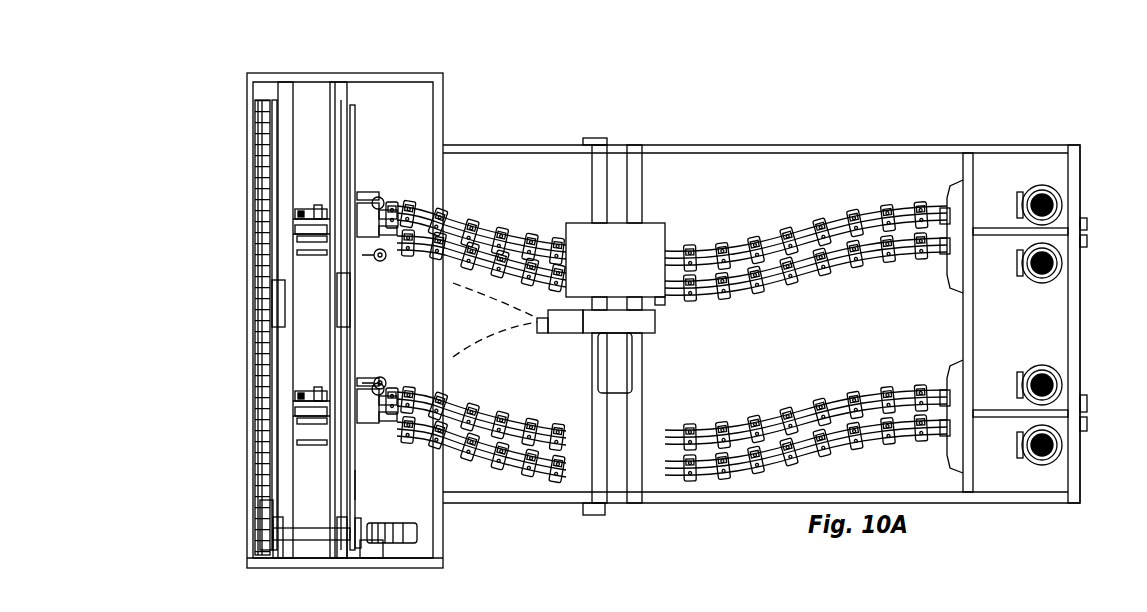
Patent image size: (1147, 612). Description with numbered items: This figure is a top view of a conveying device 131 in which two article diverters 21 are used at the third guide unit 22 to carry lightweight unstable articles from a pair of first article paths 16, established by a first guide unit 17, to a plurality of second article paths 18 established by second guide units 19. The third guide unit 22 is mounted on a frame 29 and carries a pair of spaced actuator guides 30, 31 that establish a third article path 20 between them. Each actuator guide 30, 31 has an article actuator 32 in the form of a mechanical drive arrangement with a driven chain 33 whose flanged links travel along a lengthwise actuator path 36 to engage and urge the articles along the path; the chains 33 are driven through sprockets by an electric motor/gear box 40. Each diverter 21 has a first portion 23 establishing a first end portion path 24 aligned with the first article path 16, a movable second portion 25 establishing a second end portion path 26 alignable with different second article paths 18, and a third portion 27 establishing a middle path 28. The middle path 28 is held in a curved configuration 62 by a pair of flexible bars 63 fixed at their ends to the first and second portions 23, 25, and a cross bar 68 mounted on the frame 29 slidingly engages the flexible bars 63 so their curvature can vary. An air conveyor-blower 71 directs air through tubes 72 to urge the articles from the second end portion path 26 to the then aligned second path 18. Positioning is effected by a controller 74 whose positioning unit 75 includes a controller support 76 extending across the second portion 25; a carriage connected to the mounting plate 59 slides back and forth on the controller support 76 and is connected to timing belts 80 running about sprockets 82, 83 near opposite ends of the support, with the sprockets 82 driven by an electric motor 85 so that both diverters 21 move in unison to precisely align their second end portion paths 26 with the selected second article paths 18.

The first article path 16 is at (1088, 240).
The first guide unit 17 is at (1088, 222).
The second article paths 18 is at (254, 230).
The second guide units 19 is at (257, 198).
The third article path 20 is at (797, 220).
The article diverter 21 is at (686, 250).
The third guide unit 22 is at (806, 326).
The first portion 23 is at (1063, 227).
The first end portion path 24 is at (1063, 252).
The second portion 25 is at (318, 258).
The second end portion path 26 is at (305, 209).
The third portion 27 is at (873, 213).
The middle path 28 is at (848, 272).
The frame 29 is at (455, 503).
The actuator guide 30 is at (497, 220).
The actuator guide 31 is at (480, 278).
The article actuator 32 is at (740, 295).
The driven chain 33 is at (812, 284).
The actuator path 36 is at (549, 234).
The electric motor/gear box 40 is at (1057, 256).
The mounting plate 59 is at (312, 370).
The curved configuration 62 is at (743, 242).
The flexible bars 63 is at (700, 430).
The cross bar 68 is at (598, 512).
The air conveyor-blower 71 is at (386, 380).
The tubes 72 is at (378, 196).
The controller 74 is at (327, 550).
The positioning unit 75 is at (343, 454).
The controller support 76 is at (282, 115).
The timing belts 80 is at (270, 504).
The sprockets 82 is at (262, 548).
The sprockets 83 is at (274, 100).
The electric motor 85 is at (396, 545).
The feeding apparatus 131 is at (690, 98).